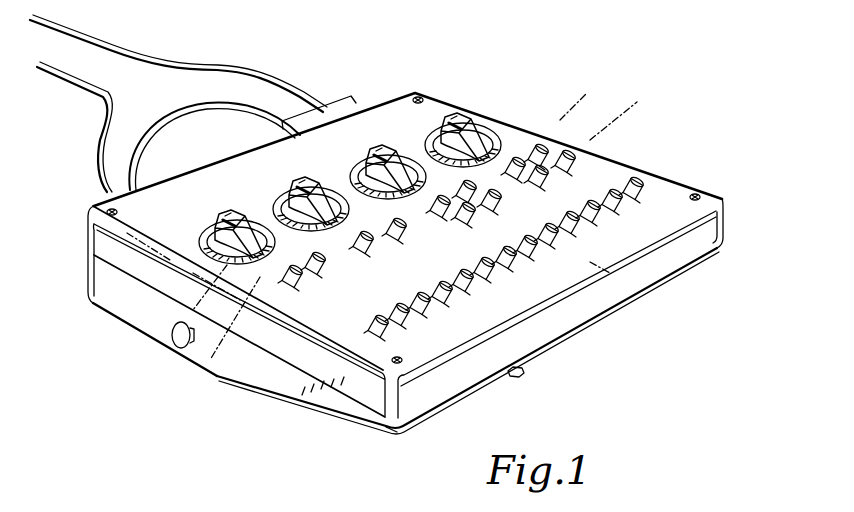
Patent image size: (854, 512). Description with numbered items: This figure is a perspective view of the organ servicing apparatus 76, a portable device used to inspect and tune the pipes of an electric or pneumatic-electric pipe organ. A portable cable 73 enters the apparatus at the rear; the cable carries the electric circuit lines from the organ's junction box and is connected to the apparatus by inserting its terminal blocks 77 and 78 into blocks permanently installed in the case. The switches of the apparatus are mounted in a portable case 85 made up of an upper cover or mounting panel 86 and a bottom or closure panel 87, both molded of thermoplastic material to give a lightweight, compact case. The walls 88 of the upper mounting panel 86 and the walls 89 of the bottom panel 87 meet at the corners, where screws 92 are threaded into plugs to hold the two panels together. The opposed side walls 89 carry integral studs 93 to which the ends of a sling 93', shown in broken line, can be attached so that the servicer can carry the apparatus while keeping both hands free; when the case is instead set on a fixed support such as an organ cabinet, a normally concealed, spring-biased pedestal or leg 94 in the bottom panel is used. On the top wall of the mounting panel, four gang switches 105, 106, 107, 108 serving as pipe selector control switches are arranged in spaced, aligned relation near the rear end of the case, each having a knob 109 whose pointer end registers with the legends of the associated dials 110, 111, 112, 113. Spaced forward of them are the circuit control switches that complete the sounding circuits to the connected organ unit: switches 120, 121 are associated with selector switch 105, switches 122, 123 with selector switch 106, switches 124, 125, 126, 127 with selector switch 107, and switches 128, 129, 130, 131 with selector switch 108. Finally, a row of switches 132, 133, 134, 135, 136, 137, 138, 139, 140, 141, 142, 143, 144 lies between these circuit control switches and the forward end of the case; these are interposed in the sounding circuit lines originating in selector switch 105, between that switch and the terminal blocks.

The portable cable 73 is at (100, 73).
The servicing apparatus 76 is at (527, 120).
The terminal block 77 is at (332, 112).
The terminal block 78 is at (100, 189).
The portable case 85 is at (123, 294).
The upper cover or mounting panel 86 is at (291, 342).
The bottom or closure panel 87 is at (315, 395).
The walls of the upper mounting panel 88 is at (170, 280).
The walls of the bottom panel 89 is at (331, 394).
The screws 92 is at (118, 212).
The integral studs 93 is at (166, 353).
The sling 93' is at (398, 229).
The pedestal or leg 94 is at (521, 372).
The gang switch 105 is at (218, 225).
The gang switch 106 is at (296, 189).
The gang switch 107 is at (368, 156).
The gang switch 108 is at (444, 126).
The knob 109 is at (231, 217).
The dial 110 is at (210, 241).
The dial 111 is at (284, 204).
The dial 112 is at (360, 175).
The dial 113 is at (432, 147).
The circuit control switch 120 is at (303, 286).
The circuit control switch 121 is at (324, 273).
The circuit control switch 122 is at (369, 254).
The circuit control switch 123 is at (398, 240).
The circuit control switch 124 is at (467, 224).
The circuit control switch 125 is at (489, 208).
The circuit control switch 126 is at (431, 206).
The circuit control switch 127 is at (466, 190).
The circuit control switch 128 is at (539, 187).
The circuit control switch 129 is at (572, 166).
The circuit control switch 130 is at (507, 168).
The circuit control switch 131 is at (534, 154).
The switch 132 is at (380, 321).
The switch 133 is at (405, 322).
The switch 134 is at (433, 300).
The switch 135 is at (447, 302).
The switch 136 is at (470, 273).
The switch 137 is at (489, 279).
The switch 138 is at (506, 252).
The switch 139 is at (530, 256).
The switch 140 is at (547, 229).
The switch 141 is at (570, 234).
The switch 142 is at (589, 212).
The switch 143 is at (611, 212).
The switch 144 is at (638, 197).